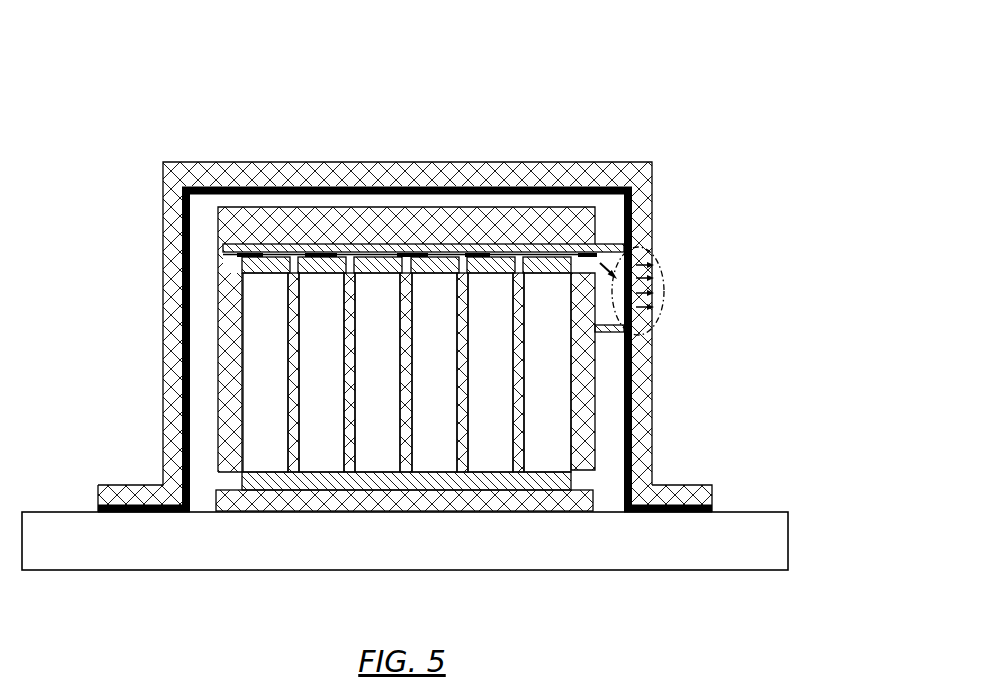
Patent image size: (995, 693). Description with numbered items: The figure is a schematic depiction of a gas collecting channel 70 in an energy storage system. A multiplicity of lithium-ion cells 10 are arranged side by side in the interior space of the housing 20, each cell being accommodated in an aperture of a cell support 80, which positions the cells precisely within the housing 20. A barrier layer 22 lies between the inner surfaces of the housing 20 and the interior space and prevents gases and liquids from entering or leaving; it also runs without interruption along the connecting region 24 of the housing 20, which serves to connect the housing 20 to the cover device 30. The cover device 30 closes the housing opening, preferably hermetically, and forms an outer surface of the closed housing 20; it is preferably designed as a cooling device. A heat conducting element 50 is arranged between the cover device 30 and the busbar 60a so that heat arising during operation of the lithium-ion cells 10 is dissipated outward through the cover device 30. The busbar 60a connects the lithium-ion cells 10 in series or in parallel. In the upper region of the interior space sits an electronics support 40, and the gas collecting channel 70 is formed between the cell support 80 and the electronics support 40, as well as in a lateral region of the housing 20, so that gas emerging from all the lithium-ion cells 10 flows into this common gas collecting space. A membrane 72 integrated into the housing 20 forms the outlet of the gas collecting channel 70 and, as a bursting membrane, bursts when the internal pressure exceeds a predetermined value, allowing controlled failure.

The lithium-ion cell 10 is at (406, 364).
The housing 20 is at (412, 256).
The barrier layer 22 is at (390, 81).
The connecting region 24 is at (700, 425).
The cover device 30 is at (405, 541).
The electronics support 40 is at (340, 261).
The heat conducting element 50 is at (632, 599).
The busbar 60a is at (525, 146).
The gas collecting channel 70 is at (817, 94).
The membrane 72 is at (717, 224).
The cell support 80 is at (121, 143).